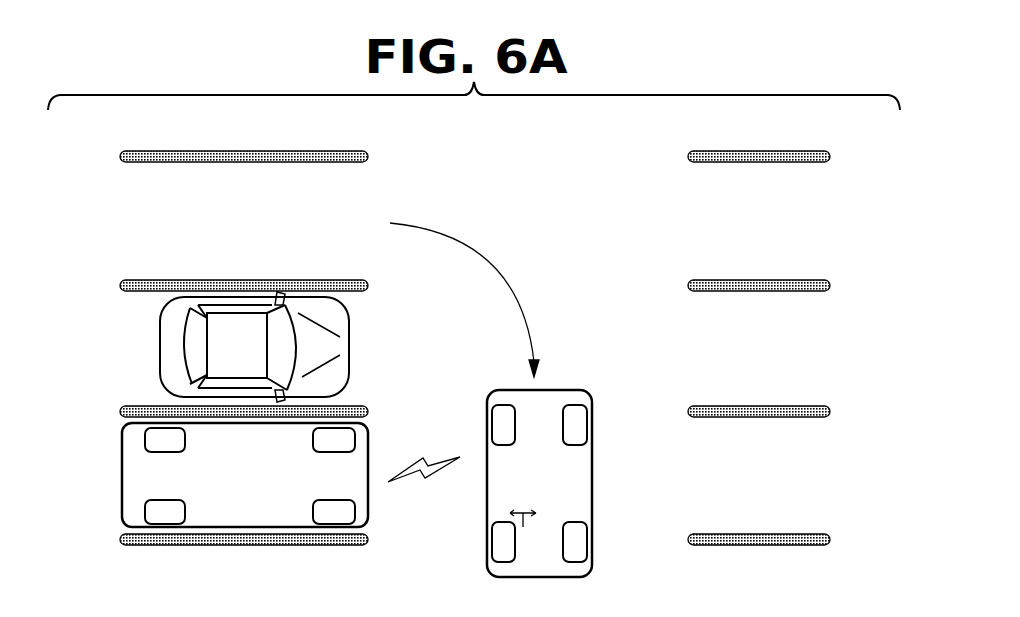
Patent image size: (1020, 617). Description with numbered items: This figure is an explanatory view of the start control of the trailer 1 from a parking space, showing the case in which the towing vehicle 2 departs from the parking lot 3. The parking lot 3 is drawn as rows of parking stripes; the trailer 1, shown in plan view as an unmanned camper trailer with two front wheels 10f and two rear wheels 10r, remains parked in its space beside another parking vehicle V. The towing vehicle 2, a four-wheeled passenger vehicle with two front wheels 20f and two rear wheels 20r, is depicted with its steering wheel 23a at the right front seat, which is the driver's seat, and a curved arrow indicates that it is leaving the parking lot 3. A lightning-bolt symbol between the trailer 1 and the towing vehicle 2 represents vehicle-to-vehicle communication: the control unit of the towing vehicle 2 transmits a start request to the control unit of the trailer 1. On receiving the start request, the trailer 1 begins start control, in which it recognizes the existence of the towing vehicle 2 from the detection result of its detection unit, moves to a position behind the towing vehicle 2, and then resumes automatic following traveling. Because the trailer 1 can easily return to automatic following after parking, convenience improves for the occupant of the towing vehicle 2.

The other parking vehicle V is at (226, 296).
The trailer 1 is at (245, 504).
The rear wheels 10r is at (170, 527).
The front wheels 10f is at (335, 527).
The towing vehicle 2 is at (545, 483).
The rear wheels 20r is at (590, 420).
The front wheels 20f is at (590, 545).
The steering wheel 23a is at (506, 515).
The parking lot 3 is at (640, 241).